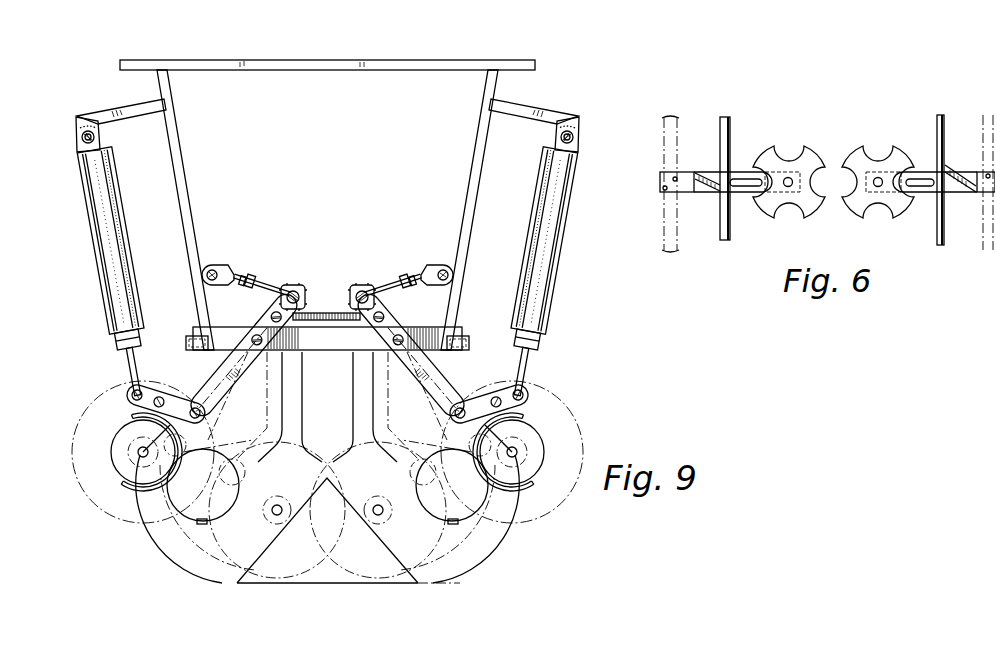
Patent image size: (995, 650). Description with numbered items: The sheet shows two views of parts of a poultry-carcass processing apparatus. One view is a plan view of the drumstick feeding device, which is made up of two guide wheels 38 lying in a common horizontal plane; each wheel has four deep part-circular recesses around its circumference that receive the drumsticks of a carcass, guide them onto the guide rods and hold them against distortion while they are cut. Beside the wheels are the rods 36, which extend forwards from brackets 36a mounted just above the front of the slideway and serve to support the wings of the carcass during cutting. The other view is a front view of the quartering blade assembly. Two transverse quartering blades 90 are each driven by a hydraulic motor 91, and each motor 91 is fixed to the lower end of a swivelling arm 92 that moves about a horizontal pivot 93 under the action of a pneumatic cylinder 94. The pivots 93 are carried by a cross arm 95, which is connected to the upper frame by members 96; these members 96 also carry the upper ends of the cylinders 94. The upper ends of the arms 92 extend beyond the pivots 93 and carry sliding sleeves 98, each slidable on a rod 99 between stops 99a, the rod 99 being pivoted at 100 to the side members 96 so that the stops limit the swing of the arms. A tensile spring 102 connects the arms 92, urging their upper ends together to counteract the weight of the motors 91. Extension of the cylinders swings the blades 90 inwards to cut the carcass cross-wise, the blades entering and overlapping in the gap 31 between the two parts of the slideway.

In FIG. 9, the members 96 is at (352, 70).
In FIG. 9, the pneumatic cylinder 94 is at (105, 271).
In FIG. 9, the pivot 100 is at (202, 276).
In FIG. 9, the rod 99 is at (270, 284).
In FIG. 9, the stops 99a is at (250, 282).
In FIG. 9, the sliding sleeve 98 is at (356, 288).
In FIG. 9, the tensile spring 102 is at (326, 313).
In FIG. 9, the cross arm 95 is at (420, 336).
In FIG. 9, the horizontal pivot 93 is at (377, 353).
In FIG. 9, the swivelling arm 92 is at (230, 386).
In FIG. 9, the gap 31 is at (337, 444).
In FIG. 9, the quartering blade 90 is at (100, 398).
In FIG. 9, the hydraulic motor 91 is at (95, 498).
In FIG. 6, the rods 36 is at (731, 140).
In FIG. 6, the brackets 36a is at (698, 171).
In FIG. 6, the guide wheels 38 is at (850, 155).